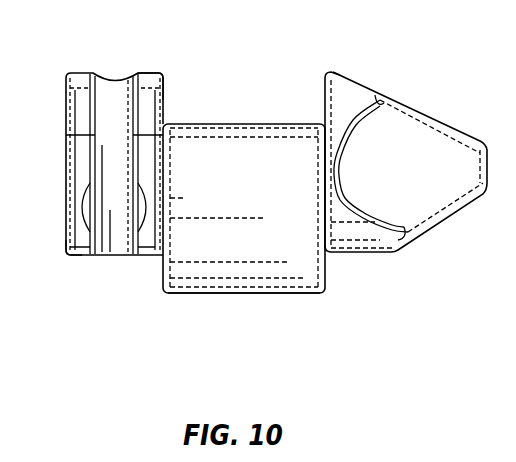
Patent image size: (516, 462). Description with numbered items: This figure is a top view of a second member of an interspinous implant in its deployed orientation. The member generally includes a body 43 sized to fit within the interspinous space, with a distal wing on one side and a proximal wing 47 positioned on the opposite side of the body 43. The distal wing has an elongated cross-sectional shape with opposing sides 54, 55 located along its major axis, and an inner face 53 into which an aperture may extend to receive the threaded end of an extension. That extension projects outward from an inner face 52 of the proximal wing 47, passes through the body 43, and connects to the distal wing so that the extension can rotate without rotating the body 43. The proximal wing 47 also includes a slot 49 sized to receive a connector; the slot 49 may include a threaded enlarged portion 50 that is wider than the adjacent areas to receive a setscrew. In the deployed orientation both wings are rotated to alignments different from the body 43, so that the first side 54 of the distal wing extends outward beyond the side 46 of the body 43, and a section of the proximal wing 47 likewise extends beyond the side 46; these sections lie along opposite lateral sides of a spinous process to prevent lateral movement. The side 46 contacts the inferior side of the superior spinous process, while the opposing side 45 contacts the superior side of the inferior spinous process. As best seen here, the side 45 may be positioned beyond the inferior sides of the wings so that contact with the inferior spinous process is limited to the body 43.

The body 43 is at (193, 267).
The side 45 is at (228, 293).
The side 46 is at (248, 123).
The proximal wing 47 is at (82, 246).
The slot 49 is at (103, 131).
The threaded enlarged portion 50 is at (87, 222).
The inner face 52 is at (167, 100).
The inner face 53 is at (323, 95).
The first side 54 is at (350, 79).
The side 55 is at (358, 252).